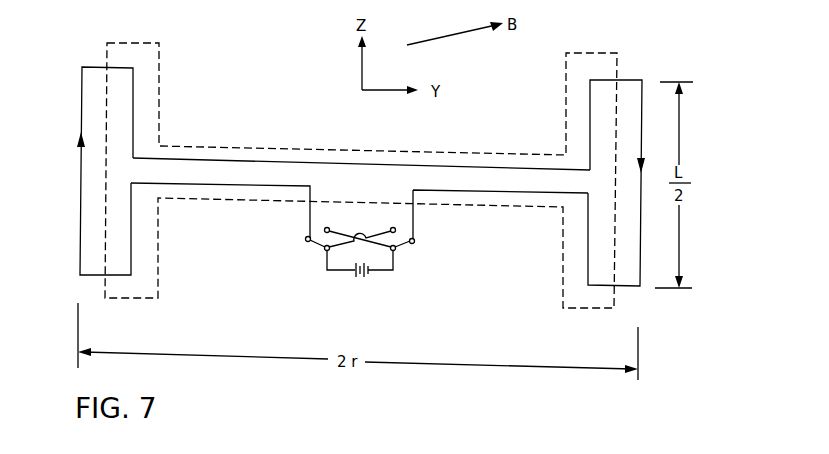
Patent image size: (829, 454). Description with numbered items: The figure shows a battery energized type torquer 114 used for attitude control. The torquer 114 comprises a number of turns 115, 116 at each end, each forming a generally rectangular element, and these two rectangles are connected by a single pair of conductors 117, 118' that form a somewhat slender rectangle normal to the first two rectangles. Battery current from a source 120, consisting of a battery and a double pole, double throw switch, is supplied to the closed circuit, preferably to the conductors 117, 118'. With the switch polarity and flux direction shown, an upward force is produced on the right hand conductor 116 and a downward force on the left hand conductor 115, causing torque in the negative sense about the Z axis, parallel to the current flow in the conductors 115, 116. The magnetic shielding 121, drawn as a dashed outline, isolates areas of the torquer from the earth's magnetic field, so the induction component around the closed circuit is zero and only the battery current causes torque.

The battery energized type torquer 114 is at (309, 70).
The turns (left hand conductor) 115 is at (79, 172).
The turns (right hand conductor) 116 is at (640, 283).
The conductor 117 is at (203, 186).
The conductor 118' is at (361, 144).
The source 120 is at (363, 273).
The magnetic shielding 121 is at (482, 208).